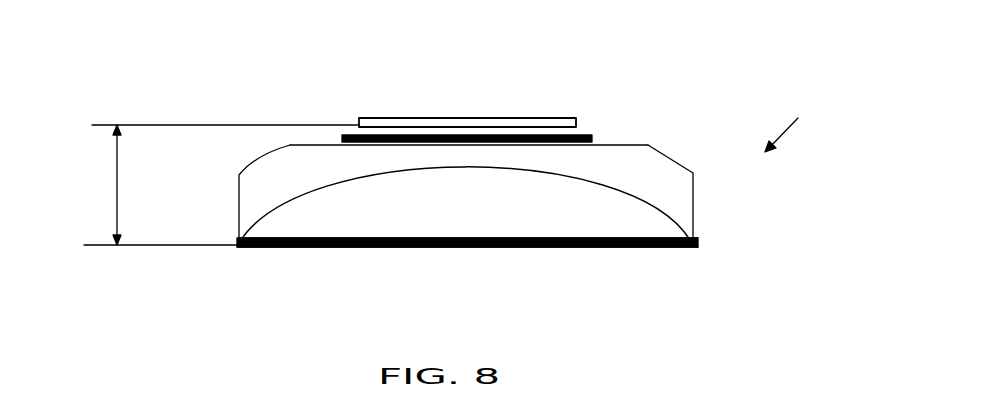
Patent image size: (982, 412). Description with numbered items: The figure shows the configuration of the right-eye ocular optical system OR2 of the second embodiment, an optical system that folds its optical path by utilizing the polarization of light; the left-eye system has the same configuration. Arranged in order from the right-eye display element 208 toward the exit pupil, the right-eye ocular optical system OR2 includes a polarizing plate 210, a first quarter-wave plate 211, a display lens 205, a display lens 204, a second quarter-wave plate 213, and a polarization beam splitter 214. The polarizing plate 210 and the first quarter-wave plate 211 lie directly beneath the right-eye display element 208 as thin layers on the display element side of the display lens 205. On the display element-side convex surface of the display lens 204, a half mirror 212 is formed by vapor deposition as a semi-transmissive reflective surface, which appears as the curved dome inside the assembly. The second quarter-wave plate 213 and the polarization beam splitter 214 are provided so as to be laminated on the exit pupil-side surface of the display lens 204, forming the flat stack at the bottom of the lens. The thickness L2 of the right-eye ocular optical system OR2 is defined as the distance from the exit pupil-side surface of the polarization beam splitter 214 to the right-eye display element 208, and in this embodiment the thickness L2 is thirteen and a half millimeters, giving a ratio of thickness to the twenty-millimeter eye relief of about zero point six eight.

The display lens 204 is at (648, 230).
The display lens 205 is at (687, 198).
The right-eye display element 208 is at (442, 117).
The polarizing plate 210 is at (593, 138).
The first λ/4 plate 211 is at (593, 143).
The half mirror 212 is at (280, 210).
The second λ/4 plate 213 is at (253, 247).
The polarization beam splitter 214 is at (290, 247).
The thickness L2 is at (220, 185).
The right-eye ocular optical system OR2 is at (795, 120).